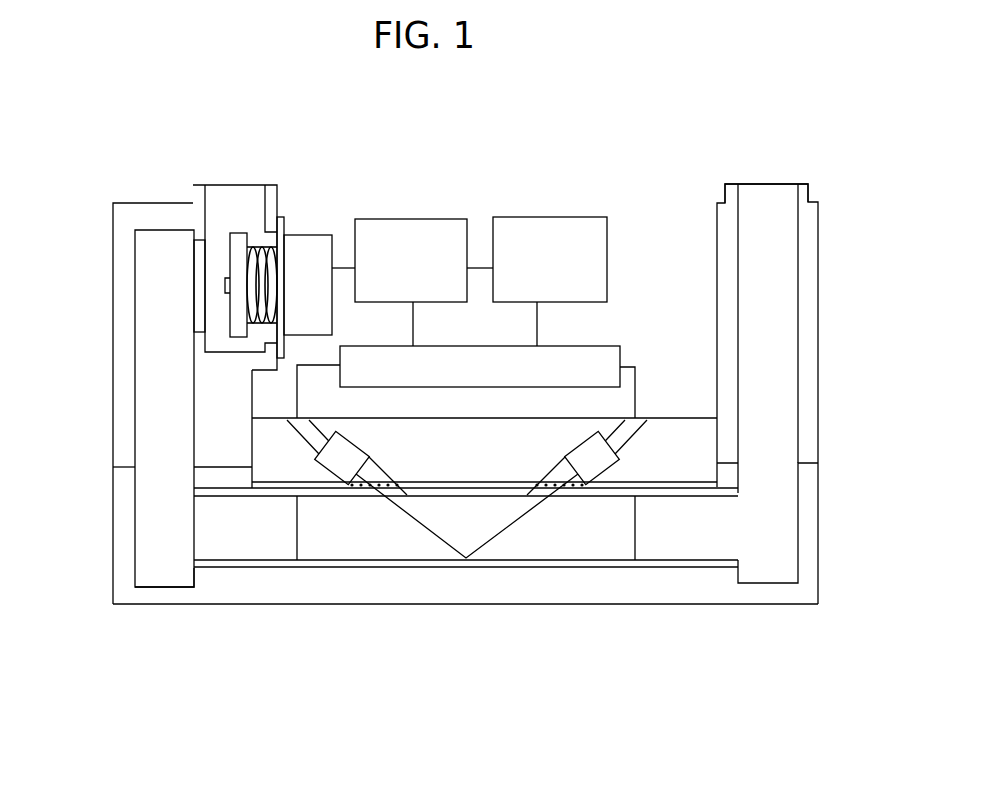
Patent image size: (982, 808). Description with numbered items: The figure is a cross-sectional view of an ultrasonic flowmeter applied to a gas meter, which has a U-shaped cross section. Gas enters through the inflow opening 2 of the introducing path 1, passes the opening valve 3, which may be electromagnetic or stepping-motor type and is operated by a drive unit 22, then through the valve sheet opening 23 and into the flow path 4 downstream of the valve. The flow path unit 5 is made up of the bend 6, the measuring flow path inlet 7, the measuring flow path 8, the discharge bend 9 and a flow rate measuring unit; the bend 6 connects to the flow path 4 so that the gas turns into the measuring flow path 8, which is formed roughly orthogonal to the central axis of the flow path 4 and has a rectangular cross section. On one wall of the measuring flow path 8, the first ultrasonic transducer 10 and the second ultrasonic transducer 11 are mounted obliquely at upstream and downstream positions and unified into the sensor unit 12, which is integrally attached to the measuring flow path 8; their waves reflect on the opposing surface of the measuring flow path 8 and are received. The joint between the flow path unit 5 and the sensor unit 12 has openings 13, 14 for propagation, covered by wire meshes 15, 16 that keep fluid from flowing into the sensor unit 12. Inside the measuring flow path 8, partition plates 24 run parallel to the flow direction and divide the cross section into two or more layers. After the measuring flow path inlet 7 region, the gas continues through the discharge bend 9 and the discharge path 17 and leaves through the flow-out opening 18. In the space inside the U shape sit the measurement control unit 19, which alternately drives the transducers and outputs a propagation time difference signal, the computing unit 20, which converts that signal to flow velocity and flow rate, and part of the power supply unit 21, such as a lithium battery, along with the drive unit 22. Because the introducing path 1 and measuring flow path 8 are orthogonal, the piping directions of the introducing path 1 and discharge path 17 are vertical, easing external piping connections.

The introducing path 1 is at (113, 250).
The inflow opening 2 is at (215, 192).
The valve 3 is at (237, 243).
The flow path 4 is at (175, 365).
The flow path unit 5 is at (237, 583).
The bend 6 is at (148, 552).
The measuring flow path inlet 7 is at (160, 516).
The measuring flow path 8 is at (287, 565).
The discharge bend 9 is at (768, 533).
The first ultrasonic transducer 10 is at (338, 455).
The second ultrasonic transducer 11 is at (598, 457).
The sensor unit 12 is at (462, 440).
The opening 13 is at (373, 492).
The opening 14 is at (559, 488).
The wire mesh 15 is at (384, 496).
The wire mesh 16 is at (575, 484).
The discharge path 17 is at (788, 352).
The flow-out opening 18 is at (765, 193).
The measurement control unit 19 is at (597, 342).
The computing unit 20 is at (575, 215).
The power supply unit 21 is at (430, 217).
The drive unit 22 is at (310, 245).
The valve sheet opening 23 is at (198, 306).
The partition plates 24 is at (365, 542).